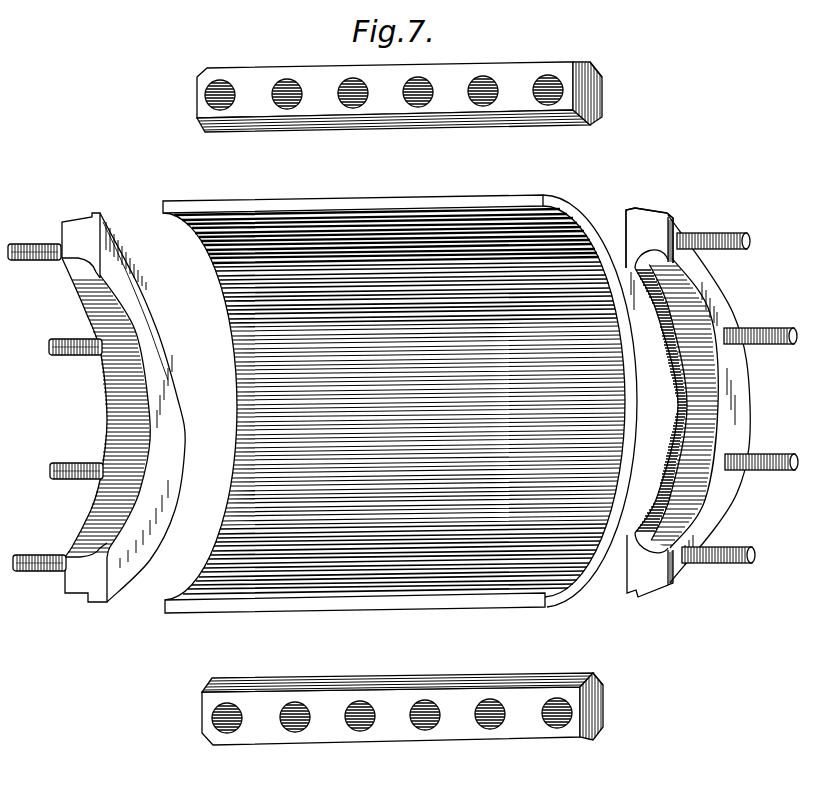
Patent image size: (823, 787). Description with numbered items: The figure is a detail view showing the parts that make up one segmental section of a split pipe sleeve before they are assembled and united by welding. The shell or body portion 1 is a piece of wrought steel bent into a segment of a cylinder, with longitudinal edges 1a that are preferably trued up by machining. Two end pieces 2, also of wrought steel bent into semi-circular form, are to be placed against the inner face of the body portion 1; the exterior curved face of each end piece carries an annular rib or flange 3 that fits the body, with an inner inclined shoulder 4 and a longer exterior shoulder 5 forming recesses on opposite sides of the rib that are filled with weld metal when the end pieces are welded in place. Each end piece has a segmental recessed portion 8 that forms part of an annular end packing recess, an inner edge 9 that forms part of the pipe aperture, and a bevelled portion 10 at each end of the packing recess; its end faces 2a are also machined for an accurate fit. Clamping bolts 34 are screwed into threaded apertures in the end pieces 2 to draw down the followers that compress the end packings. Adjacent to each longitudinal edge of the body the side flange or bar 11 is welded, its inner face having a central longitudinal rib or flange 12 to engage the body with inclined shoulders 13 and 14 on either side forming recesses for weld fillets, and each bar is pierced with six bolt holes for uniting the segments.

The shell or body portion 1 is at (632, 393).
The longitudinal edges 1a is at (362, 203).
The end pieces 2 is at (720, 306).
The end faces 2a is at (67, 237).
The annular rib or flange 3 is at (636, 208).
The inner inclined shoulder 4 is at (627, 210).
The longer exterior shoulder 5 is at (657, 212).
The segmental recessed portion 8 is at (700, 410).
The inner edge 9 is at (680, 420).
The bevelled portion 10 is at (656, 252).
The side flange or bar 11 is at (590, 99).
The central longitudinal rib or flange 12 is at (593, 124).
The inclined shoulder 13 is at (593, 122).
The inclined shoulder 14 is at (577, 118).
The clamping bolts 34 is at (743, 243).